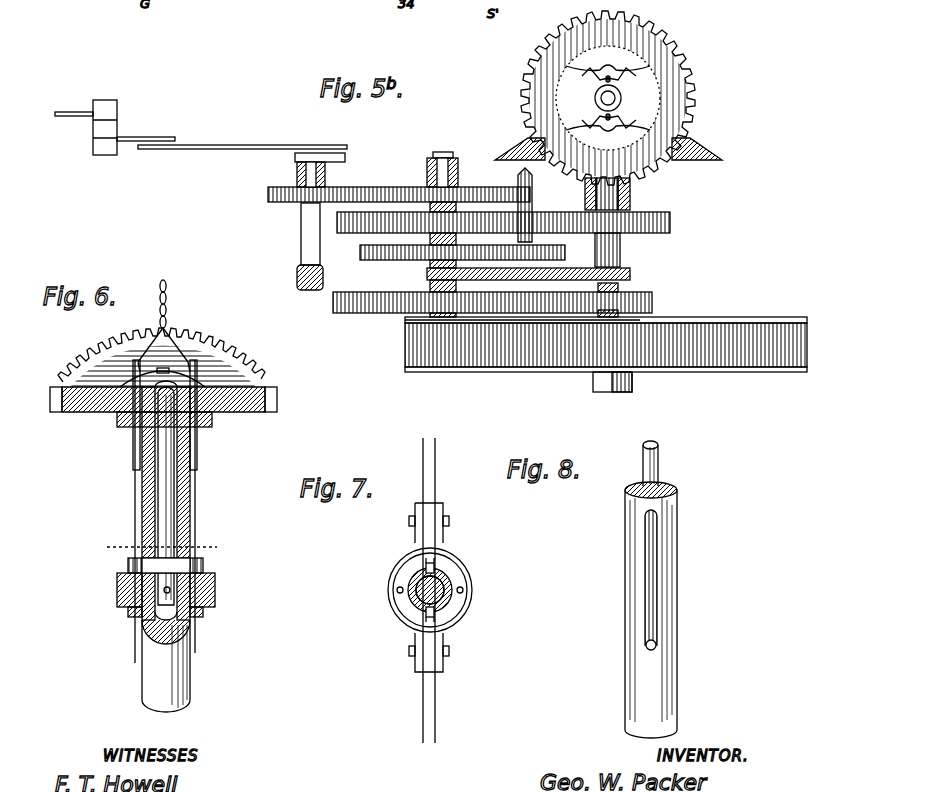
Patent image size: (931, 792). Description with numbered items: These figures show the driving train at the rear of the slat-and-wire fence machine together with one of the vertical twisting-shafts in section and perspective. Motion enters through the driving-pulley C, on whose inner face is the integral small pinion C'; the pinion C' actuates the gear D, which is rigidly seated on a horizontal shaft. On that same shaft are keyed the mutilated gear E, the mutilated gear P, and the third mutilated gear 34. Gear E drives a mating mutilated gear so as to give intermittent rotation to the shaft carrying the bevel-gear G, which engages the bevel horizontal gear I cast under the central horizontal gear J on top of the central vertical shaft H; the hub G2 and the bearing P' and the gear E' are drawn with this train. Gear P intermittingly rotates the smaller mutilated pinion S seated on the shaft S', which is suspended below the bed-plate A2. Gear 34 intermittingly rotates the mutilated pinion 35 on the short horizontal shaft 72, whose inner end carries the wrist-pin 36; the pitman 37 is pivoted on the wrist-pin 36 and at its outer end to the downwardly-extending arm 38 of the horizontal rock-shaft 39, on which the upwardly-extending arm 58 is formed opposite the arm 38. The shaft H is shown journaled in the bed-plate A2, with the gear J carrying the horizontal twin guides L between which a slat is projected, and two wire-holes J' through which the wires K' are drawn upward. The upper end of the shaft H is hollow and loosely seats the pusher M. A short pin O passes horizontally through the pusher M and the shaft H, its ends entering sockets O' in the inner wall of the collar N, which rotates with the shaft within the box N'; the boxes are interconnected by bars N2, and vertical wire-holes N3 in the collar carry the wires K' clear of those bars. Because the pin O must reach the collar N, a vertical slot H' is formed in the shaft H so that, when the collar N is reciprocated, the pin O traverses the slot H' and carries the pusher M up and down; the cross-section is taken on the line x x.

In FIG. 5B, the bevel-gear G is at (722, 156).
In FIG. 5B, the bevel horizontal gear I is at (660, 118).
In FIG. 5B, the pusher M is at (595, 98).
In FIG. 6, the pusher M is at (184, 475).
In FIG. 7, the pusher M is at (448, 578).
In FIG. 8, the pusher M is at (658, 465).
In FIG. 5B, the vertical shaft H is at (630, 97).
In FIG. 6, the vertical shaft H is at (166, 549).
In FIG. 7, the vertical shaft H is at (410, 606).
In FIG. 8, the vertical shaft H is at (651, 610).
In FIG. 5B, the horizontal gear J is at (620, 97).
In FIG. 6, the horizontal gear J is at (170, 370).
In FIG. 5B, the mutilated gear E is at (503, 222).
In FIG. 5B, the gear E' is at (676, 207).
In FIG. 5B, the third mutilated gear 34 is at (399, 187).
In FIG. 5B, the mutilated pinion 35 is at (268, 194).
In FIG. 5B, the mutilated pinion S is at (469, 252).
In FIG. 5B, the mutilated gear P is at (499, 276).
In FIG. 5B, the pinion C' is at (504, 300).
In FIG. 5B, the gear D is at (494, 323).
In FIG. 5B, the driving-pulley C is at (606, 354).
In FIG. 5B, the shaft S' is at (536, 205).
In FIG. 5B, the hub G2 is at (620, 252).
In FIG. 5B, the bearing P' is at (442, 161).
In FIG. 5B, the short horizontal shaft 72 is at (301, 246).
In FIG. 5B, the wrist-pin 36 is at (345, 158).
In FIG. 5B, the pitman 37 is at (242, 138).
In FIG. 5B, the downwardly-extending arm 38 is at (146, 128).
In FIG. 5B, the horizontal rock-shaft 39 is at (112, 100).
In FIG. 5B, the upwardly-extending arm 58 is at (68, 112).
In FIG. 6, the twin guides L is at (190, 350).
In FIG. 6, the bed-plate A2 is at (212, 422).
In FIG. 6, the wire-holes J' is at (157, 415).
In FIG. 6, the wires K' is at (162, 511).
In FIG. 6, the section line x is at (161, 547).
In FIG. 6, the collar N is at (177, 562).
In FIG. 7, the collar N is at (440, 590).
In FIG. 6, the box N' is at (177, 595).
In FIG. 7, the box N' is at (444, 587).
In FIG. 6, the socket O' is at (135, 613).
In FIG. 7, the bars N2 is at (435, 478).
In FIG. 7, the vertical wire-holes N3 is at (463, 590).
In FIG. 7, the short pin O is at (448, 575).
In FIG. 8, the short pin O is at (669, 639).
In FIG. 8, the vertical slot H' is at (671, 577).